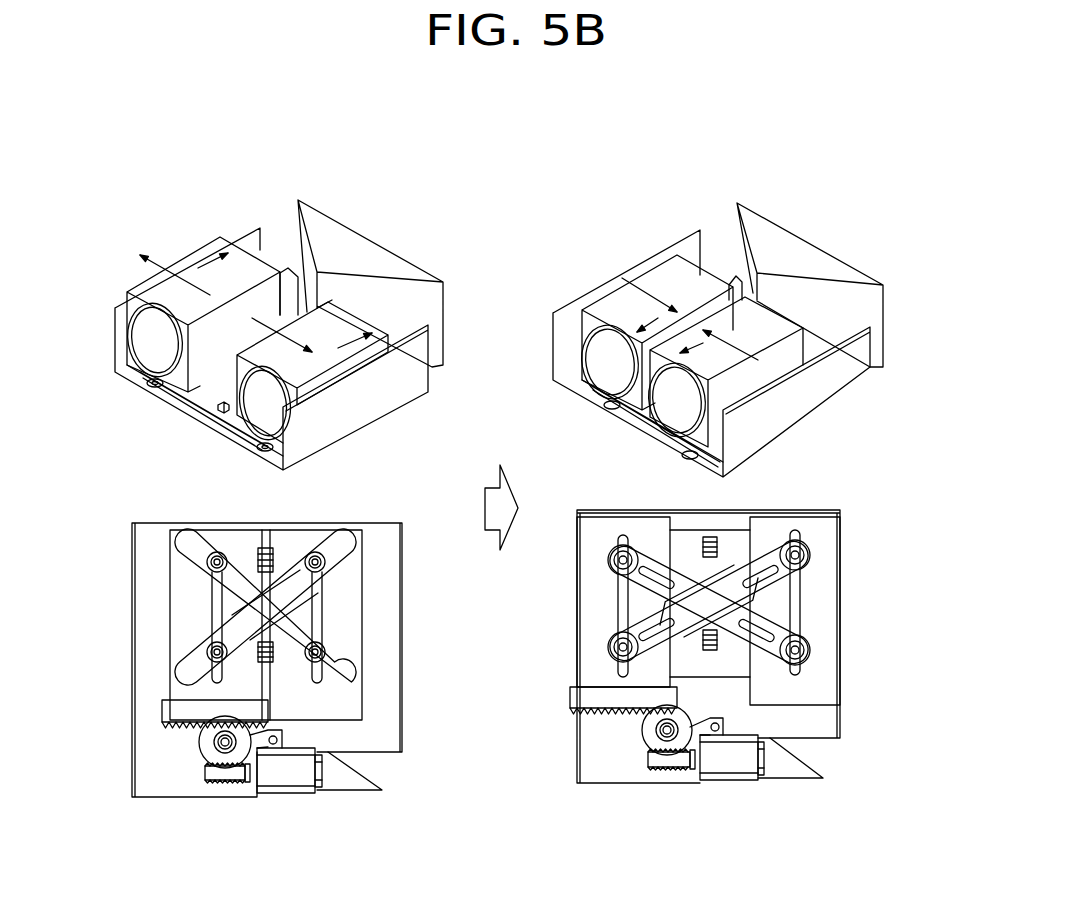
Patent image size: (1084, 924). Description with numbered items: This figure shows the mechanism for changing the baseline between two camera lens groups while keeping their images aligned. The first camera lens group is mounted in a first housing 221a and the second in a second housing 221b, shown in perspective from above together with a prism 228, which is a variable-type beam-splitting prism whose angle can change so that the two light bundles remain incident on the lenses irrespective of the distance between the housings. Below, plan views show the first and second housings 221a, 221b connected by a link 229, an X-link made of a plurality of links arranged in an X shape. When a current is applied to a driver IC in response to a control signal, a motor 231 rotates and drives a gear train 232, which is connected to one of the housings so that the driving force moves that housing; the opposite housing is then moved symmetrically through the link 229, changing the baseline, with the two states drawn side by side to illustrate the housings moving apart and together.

The first housing 221a is at (210, 250).
The second housing 221b is at (327, 355).
The prism 228 is at (358, 248).
The link 229 is at (278, 598).
The motor 231 is at (283, 777).
The gear train 232 is at (223, 780).